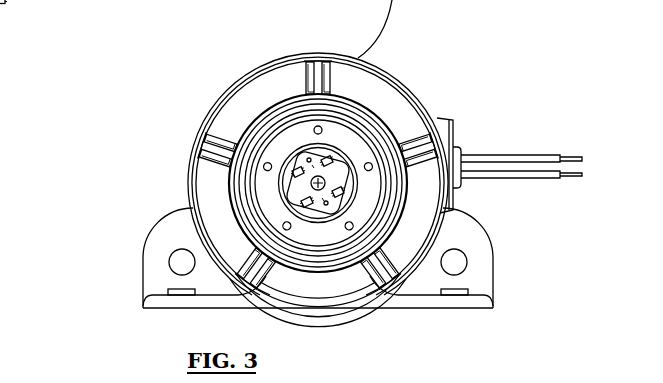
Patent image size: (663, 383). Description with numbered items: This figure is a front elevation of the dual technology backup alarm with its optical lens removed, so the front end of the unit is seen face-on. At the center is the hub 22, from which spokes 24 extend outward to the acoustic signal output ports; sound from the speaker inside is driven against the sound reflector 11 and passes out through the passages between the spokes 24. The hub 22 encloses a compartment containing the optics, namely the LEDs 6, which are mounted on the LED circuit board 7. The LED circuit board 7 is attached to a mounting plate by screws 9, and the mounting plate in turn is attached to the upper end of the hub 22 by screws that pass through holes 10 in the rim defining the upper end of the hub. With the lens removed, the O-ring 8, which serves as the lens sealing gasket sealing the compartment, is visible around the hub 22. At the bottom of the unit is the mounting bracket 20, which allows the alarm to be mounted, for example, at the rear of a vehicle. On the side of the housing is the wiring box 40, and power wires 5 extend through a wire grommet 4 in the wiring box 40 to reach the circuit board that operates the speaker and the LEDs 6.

The wire grommet 4 is at (462, 150).
The power wires 5 is at (512, 156).
The LEDs 6 is at (293, 171).
The LED circuit board 7 is at (297, 157).
The O-ring 8 is at (353, 205).
The screws 9 is at (311, 185).
The holes 10 is at (281, 226).
The sound reflector 11 is at (265, 97).
The mounting bracket 20 is at (143, 281).
The hub 22 is at (257, 115).
The spokes 24 is at (203, 148).
The wiring box 40 is at (440, 112).